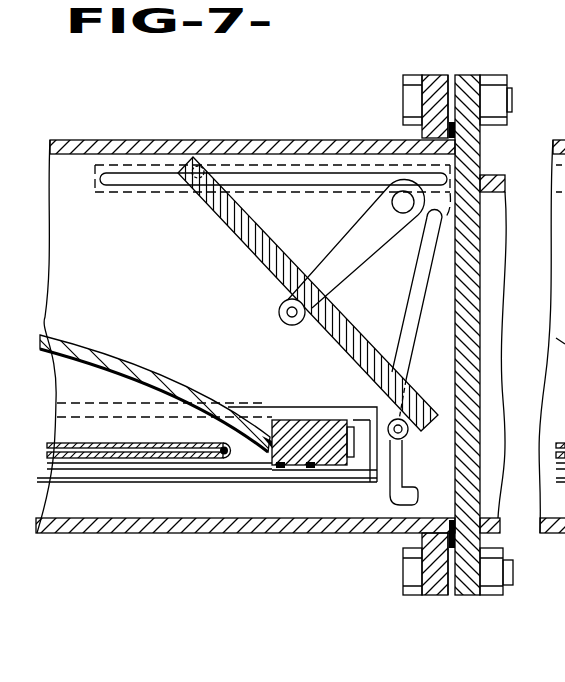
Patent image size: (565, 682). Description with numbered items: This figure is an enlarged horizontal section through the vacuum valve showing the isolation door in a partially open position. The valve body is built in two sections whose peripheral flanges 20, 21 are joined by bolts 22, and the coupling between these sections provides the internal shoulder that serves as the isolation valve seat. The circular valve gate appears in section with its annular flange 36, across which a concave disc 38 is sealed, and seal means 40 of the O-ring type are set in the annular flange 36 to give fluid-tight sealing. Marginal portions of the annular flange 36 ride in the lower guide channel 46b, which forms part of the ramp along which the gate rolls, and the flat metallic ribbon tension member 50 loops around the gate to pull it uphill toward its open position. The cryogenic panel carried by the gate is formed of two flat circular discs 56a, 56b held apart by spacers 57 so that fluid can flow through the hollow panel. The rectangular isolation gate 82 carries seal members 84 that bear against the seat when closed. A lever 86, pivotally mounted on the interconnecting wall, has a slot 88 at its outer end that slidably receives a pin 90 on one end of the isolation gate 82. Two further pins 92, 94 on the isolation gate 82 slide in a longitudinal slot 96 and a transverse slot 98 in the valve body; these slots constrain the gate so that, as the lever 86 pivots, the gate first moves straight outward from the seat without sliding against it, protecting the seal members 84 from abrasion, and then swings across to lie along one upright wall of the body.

The peripheral flange 20 is at (466, 590).
The peripheral flange 21 is at (437, 596).
The bolts 22 is at (509, 576).
The annular flange 36 is at (330, 464).
The concave disc 38 is at (98, 357).
The seal means 40 is at (312, 468).
The lower guide channel 46b is at (365, 427).
The tension member 50 is at (354, 448).
The flat circular disc 56a is at (150, 455).
The flat circular disc 56b is at (148, 445).
The spacers 57 is at (123, 453).
The isolation gate 82 is at (254, 229).
The seal members 84 is at (201, 157).
The lever 86 is at (354, 265).
The slot 88 is at (280, 315).
The pin 90 is at (294, 322).
The pin 92 is at (190, 180).
The pin 94 is at (410, 434).
The longitudinal slot 96 is at (125, 180).
The transverse slot 98 is at (412, 320).